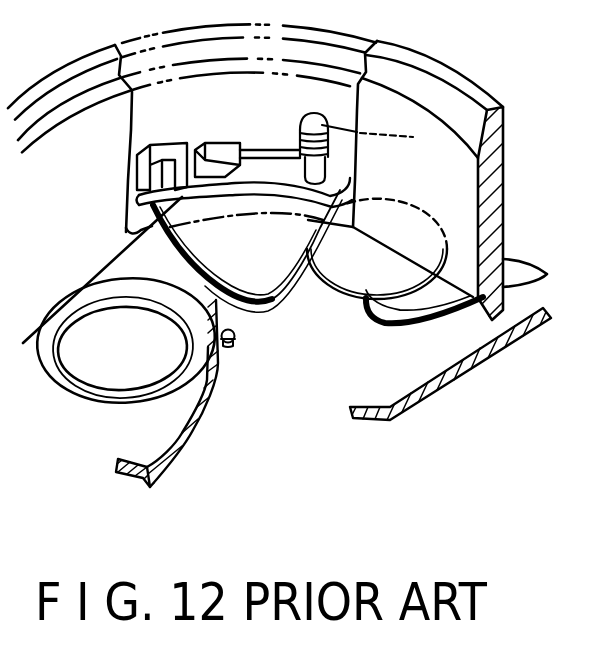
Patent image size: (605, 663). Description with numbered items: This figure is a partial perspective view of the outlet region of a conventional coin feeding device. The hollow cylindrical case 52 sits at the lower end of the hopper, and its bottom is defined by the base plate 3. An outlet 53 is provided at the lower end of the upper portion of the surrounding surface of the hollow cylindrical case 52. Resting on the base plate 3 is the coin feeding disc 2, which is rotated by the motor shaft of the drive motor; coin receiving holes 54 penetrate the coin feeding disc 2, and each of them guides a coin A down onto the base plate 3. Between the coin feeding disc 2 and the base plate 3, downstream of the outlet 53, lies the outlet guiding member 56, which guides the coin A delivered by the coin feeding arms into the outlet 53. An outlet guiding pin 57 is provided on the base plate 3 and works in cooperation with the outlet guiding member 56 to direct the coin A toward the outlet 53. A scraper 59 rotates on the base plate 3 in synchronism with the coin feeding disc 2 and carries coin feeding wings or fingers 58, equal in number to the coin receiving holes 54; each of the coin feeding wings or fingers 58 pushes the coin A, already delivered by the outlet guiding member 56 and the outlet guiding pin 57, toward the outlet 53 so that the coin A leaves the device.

The coin feeding disc 2 is at (150, 424).
The base plate 3 is at (405, 378).
The hollow cylindrical case 52 is at (495, 164).
The outlet 53 is at (505, 324).
The coin receiving holes 54 is at (93, 397).
The outlet guiding member 56 is at (267, 255).
The outlet guiding pin 57 is at (236, 348).
The coin feeding wings or fingers 58 is at (478, 313).
The scraper 59 is at (526, 262).
The coin A is at (368, 282).